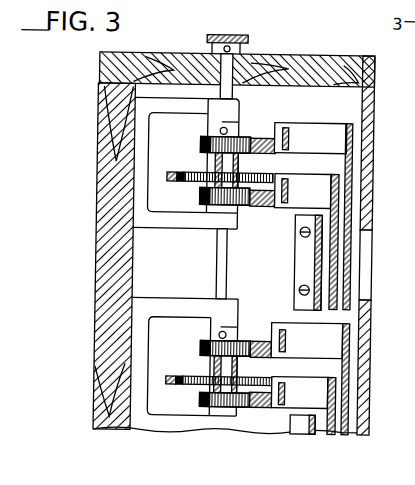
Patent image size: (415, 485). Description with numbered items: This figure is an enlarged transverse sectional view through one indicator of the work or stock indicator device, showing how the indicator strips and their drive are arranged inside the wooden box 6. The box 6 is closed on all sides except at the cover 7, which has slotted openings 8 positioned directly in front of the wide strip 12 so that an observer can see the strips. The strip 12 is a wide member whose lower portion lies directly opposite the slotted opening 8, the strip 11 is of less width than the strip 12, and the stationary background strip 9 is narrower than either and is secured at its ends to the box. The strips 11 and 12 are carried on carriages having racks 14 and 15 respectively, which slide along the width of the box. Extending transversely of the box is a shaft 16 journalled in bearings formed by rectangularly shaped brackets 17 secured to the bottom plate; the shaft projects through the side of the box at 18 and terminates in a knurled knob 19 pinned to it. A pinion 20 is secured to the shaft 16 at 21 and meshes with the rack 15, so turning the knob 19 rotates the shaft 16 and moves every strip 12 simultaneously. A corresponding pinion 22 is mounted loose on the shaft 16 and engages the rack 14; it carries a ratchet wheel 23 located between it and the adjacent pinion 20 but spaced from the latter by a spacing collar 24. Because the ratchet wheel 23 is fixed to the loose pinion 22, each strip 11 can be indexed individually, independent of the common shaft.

The box 6 is at (153, 63).
The cover 7 is at (366, 380).
The slotted openings 8 is at (370, 236).
The background strip 9 is at (316, 259).
The movable strip 11 is at (330, 265).
The movable strip 12 is at (350, 163).
The rack 14 is at (251, 198).
The rack 15 is at (258, 137).
The shaft 16 is at (217, 262).
The brackets 17 is at (171, 222).
The shaft projection 18 is at (226, 70).
The knurled knob 19 is at (229, 35).
The pinion 20 is at (199, 146).
The pin 21 is at (218, 131).
The pinion 22 is at (199, 197).
The ratchet wheel 23 is at (248, 175).
The spacing collar 24 is at (214, 163).